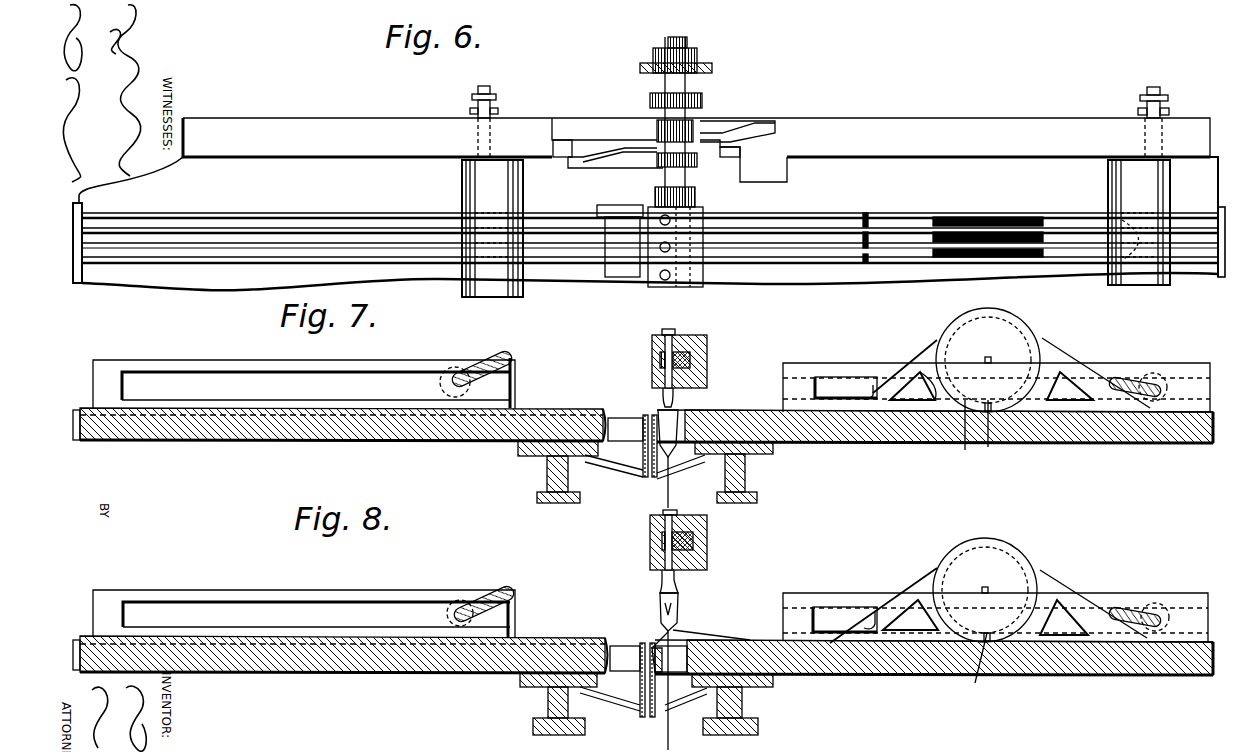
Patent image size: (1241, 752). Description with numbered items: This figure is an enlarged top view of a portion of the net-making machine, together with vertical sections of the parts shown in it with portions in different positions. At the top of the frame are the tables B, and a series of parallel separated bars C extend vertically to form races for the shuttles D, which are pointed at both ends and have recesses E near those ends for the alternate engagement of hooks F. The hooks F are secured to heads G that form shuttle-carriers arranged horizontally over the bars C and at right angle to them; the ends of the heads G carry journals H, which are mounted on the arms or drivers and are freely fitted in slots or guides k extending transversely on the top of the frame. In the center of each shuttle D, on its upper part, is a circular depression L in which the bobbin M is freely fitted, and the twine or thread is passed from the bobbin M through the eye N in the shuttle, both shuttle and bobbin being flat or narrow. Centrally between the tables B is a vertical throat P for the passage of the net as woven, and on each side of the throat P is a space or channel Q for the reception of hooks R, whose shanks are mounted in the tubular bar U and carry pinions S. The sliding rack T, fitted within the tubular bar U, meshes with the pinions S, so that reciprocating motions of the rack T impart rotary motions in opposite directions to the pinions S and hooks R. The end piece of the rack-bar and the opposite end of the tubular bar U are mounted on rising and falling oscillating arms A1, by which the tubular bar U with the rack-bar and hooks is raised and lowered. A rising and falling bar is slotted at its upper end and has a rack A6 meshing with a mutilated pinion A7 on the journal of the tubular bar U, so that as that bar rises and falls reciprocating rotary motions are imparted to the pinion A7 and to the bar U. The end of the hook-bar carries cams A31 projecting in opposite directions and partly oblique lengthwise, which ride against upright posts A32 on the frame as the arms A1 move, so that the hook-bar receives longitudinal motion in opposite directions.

In FIG. 6, the tables B is at (945, 118).
In FIG. 6, the mutilated pinion A7 is at (660, 35).
In FIG. 6, the rack A6 is at (712, 68).
In FIG. 6, the rising and falling oscillating arms A1 is at (702, 102).
In FIG. 6, the cams A31 is at (616, 152).
In FIG. 6, the upright posts A32 is at (554, 145).
In FIG. 6, the journals H is at (470, 101).
In FIG. 6, the heads G is at (816, 228).
In FIG. 7, the heads G is at (470, 373).
In FIG. 8, the heads G is at (474, 602).
In FIG. 6, the hooks F is at (516, 288).
In FIG. 7, the hooks F is at (512, 367).
In FIG. 8, the hooks F is at (514, 601).
In FIG. 6, the parallel separated bars C is at (590, 262).
In FIG. 7, the parallel separated bars C is at (612, 407).
In FIG. 8, the parallel separated bars C is at (604, 642).
In FIG. 6, the space or channel Q is at (650, 246).
In FIG. 7, the space or channel Q is at (625, 431).
In FIG. 8, the space or channel Q is at (648, 659).
In FIG. 6, the bobbin M is at (990, 220).
In FIG. 7, the bobbin M is at (988, 318).
In FIG. 8, the bobbin M is at (988, 534).
In FIG. 6, the recesses E is at (868, 215).
In FIG. 7, the recesses E is at (870, 384).
In FIG. 8, the recesses E is at (873, 612).
In FIG. 6, the shuttles D is at (905, 220).
In FIG. 7, the shuttles D is at (1078, 358).
In FIG. 8, the shuttles D is at (400, 656).
In FIG. 7, the slots or guides k is at (340, 383).
In FIG. 8, the slots or guides k is at (328, 612).
In FIG. 7, the circular depression L is at (983, 363).
In FIG. 8, the circular depression L is at (959, 599).
In FIG. 7, the eye N is at (990, 446).
In FIG. 8, the eye N is at (987, 671).
In FIG. 7, the sliding rack T is at (707, 355).
In FIG. 8, the sliding rack T is at (707, 538).
In FIG. 7, the pinions S is at (660, 363).
In FIG. 8, the pinions S is at (662, 546).
In FIG. 7, the tubular bar U is at (652, 339).
In FIG. 8, the tubular bar U is at (650, 520).
In FIG. 7, the hooks R is at (674, 422).
In FIG. 8, the hooks R is at (678, 623).
In FIG. 7, the vertical throat P is at (643, 473).
In FIG. 8, the vertical throat P is at (640, 714).